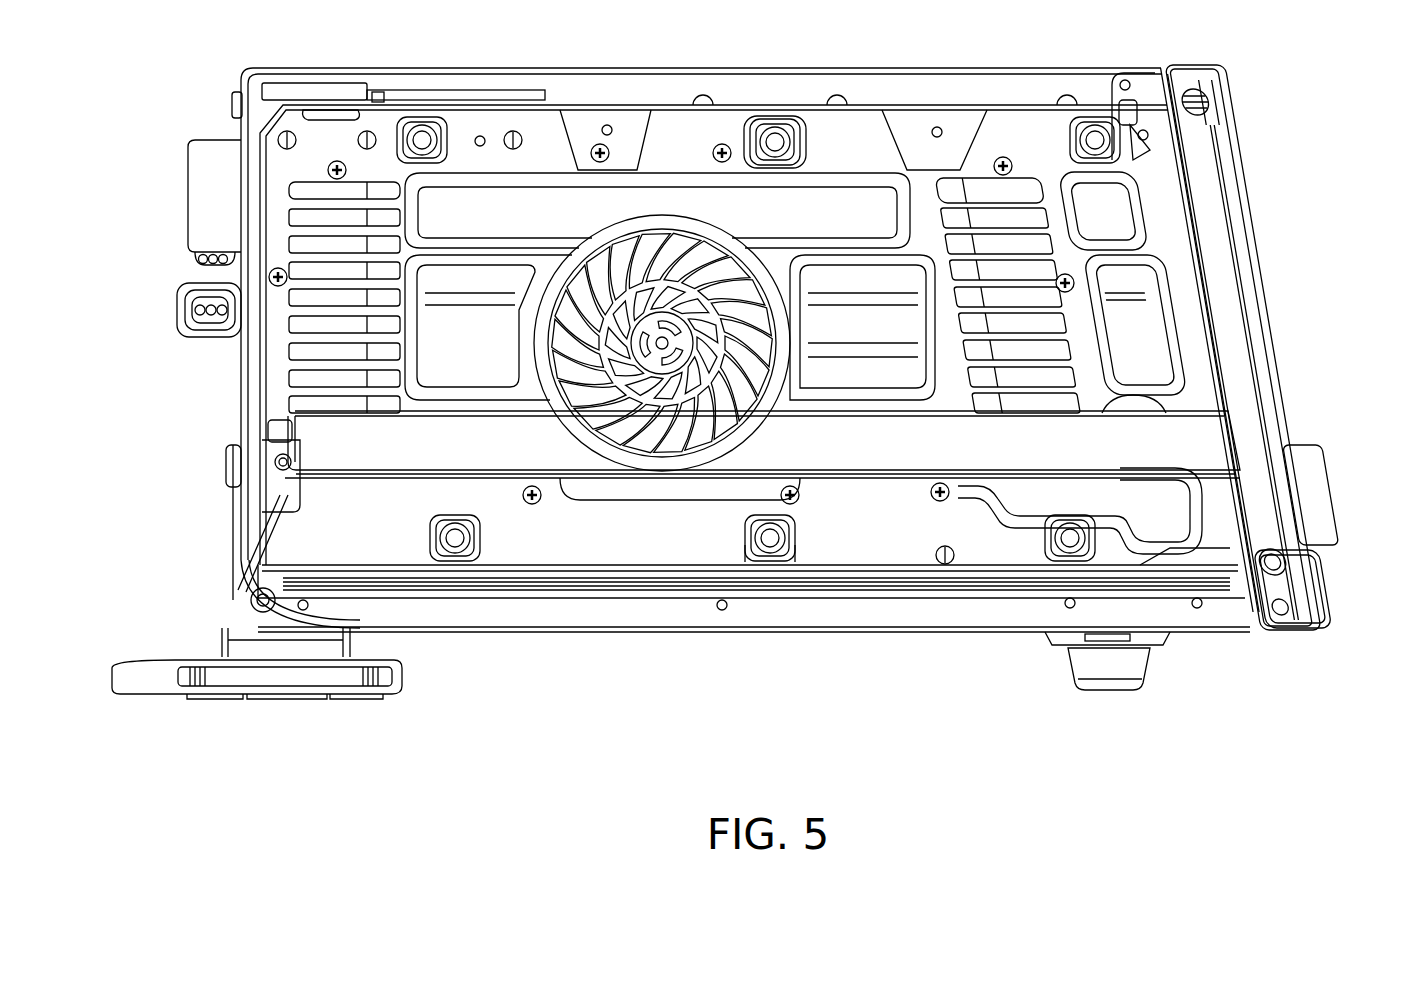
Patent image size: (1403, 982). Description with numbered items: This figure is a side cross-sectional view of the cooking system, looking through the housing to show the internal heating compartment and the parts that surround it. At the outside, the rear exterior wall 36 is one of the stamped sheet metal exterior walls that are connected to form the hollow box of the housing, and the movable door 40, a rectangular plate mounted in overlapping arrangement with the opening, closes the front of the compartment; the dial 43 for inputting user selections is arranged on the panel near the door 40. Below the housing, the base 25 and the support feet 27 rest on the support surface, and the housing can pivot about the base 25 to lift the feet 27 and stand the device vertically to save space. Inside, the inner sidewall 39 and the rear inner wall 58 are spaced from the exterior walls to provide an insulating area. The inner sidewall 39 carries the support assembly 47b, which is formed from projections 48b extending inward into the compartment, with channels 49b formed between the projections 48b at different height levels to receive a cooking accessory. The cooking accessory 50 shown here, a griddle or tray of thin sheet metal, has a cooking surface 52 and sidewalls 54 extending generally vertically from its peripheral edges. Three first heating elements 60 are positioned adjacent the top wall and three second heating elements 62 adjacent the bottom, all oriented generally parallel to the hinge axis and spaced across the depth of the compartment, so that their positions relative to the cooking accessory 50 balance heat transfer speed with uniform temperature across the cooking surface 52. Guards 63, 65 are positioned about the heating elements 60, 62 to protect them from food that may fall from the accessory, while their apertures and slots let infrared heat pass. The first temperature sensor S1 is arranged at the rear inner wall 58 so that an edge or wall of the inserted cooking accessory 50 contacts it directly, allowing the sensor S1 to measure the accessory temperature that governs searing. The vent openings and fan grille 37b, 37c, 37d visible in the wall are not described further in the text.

The base 25 is at (372, 695).
The support feet 27 is at (1130, 665).
The rear exterior wall 36 is at (262, 455).
The right vent slots 37b is at (985, 163).
The left vent slots 37c is at (307, 212).
The fan grille 37d is at (661, 228).
The inner sidewall 39 is at (1102, 210).
The door 40 is at (1268, 302).
The dial 43 is at (1310, 497).
The support assembly 47b is at (540, 195).
The projections 48b is at (865, 205).
The channels 49b is at (458, 253).
The cooking accessory 50 is at (885, 455).
The cooking surface 52 is at (512, 480).
The sidewalls 54 is at (280, 425).
The rear inner wall 58 is at (263, 214).
The first heating elements 60 is at (421, 118).
The second heating elements 62 is at (455, 550).
The guard 63 is at (747, 548).
The guard 65 is at (745, 125).
The first temperature sensor S1 is at (262, 545).